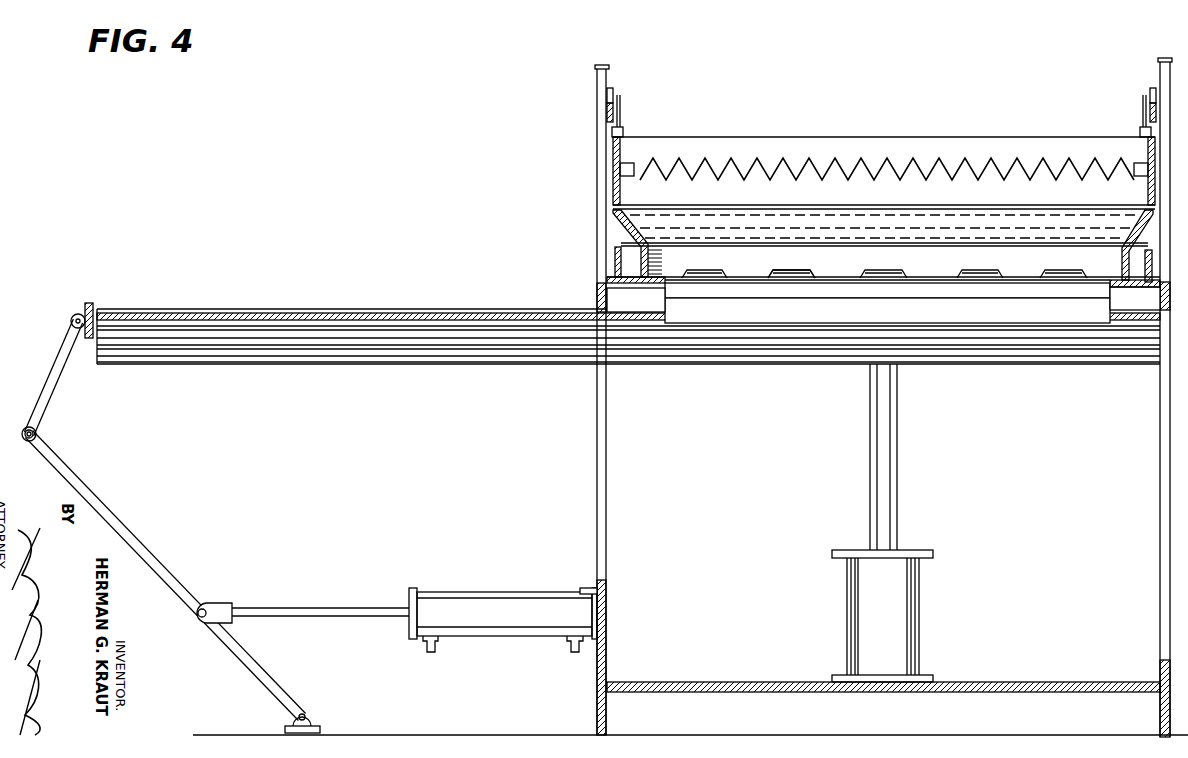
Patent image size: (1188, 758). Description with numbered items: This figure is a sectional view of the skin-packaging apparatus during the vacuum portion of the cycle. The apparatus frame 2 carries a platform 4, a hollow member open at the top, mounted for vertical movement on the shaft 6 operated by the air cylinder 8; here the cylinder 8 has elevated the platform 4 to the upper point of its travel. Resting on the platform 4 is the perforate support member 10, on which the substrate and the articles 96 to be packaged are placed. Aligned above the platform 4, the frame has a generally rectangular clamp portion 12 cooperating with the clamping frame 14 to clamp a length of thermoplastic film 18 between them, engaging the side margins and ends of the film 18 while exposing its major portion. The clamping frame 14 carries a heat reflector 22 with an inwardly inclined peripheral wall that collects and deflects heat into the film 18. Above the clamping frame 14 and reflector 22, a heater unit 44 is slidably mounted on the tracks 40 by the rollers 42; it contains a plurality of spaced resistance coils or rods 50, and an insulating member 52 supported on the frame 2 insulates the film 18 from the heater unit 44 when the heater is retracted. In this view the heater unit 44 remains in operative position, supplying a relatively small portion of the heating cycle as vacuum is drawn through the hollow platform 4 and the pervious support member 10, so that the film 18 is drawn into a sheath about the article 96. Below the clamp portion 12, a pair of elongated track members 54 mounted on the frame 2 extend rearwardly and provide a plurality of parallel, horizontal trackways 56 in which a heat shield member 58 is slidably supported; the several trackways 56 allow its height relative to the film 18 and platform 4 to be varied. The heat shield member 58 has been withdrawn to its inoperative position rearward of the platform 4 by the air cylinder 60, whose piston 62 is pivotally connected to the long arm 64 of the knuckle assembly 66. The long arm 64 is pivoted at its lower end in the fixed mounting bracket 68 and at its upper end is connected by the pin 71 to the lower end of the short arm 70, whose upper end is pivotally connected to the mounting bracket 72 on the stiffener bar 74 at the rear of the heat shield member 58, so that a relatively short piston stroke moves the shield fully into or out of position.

The apparatus frame 2 is at (607, 553).
The platform 4 is at (830, 330).
The shaft 6 is at (870, 462).
The air cylinder 8 is at (847, 582).
The perforate support member 10 is at (748, 300).
The clamp portion 12 is at (600, 295).
The clamping frame 14 is at (614, 262).
The thermoplastic film 18 is at (895, 276).
The heat reflector 22 is at (820, 208).
The tracks 40 is at (606, 112).
The rollers 42 is at (613, 93).
The heater unit 44 is at (846, 136).
The resistance coils or rods 50 is at (975, 166).
The insulating member 52 is at (612, 226).
The track members 54 is at (245, 309).
The trackways 56 is at (344, 354).
The heat shield member 58 is at (333, 318).
The air cylinder 60 is at (515, 592).
The piston 62 is at (350, 607).
The long arm 64 is at (147, 547).
The knuckle assembly 66 is at (40, 434).
The fixed mounting bracket 68 is at (313, 718).
The short arm 70 is at (56, 366).
The pin 71 is at (42, 424).
The mounting bracket 72 is at (80, 313).
The stiffener bar 74 is at (90, 304).
The articles 96 is at (800, 276).